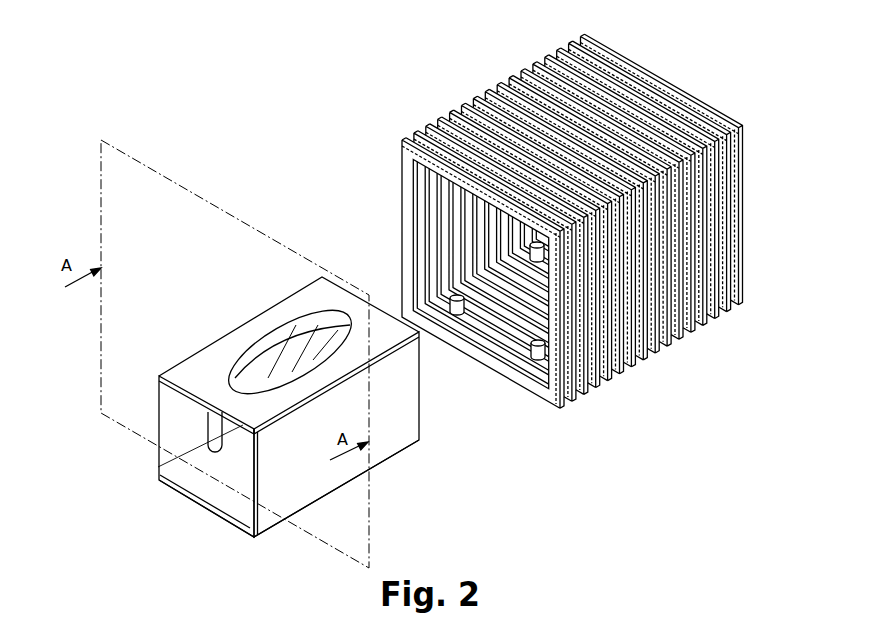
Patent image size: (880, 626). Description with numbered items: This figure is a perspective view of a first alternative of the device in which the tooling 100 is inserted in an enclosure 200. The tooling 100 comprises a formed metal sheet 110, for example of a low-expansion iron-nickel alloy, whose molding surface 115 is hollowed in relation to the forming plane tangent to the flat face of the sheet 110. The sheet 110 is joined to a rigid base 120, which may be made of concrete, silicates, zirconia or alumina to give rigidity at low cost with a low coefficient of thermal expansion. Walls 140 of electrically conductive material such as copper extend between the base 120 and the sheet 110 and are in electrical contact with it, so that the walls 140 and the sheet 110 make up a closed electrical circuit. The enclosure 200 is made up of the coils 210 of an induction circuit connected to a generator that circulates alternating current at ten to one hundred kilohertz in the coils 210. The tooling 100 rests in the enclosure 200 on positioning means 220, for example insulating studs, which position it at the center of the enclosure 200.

The tooling 100 is at (222, 283).
The formed metal sheet 110 is at (190, 376).
The molding surface 115 is at (283, 350).
The base 120 is at (178, 473).
The walls 140 is at (352, 428).
The enclosure 200 is at (409, 96).
The coils 210 is at (534, 64).
The positioning means 220 is at (537, 354).